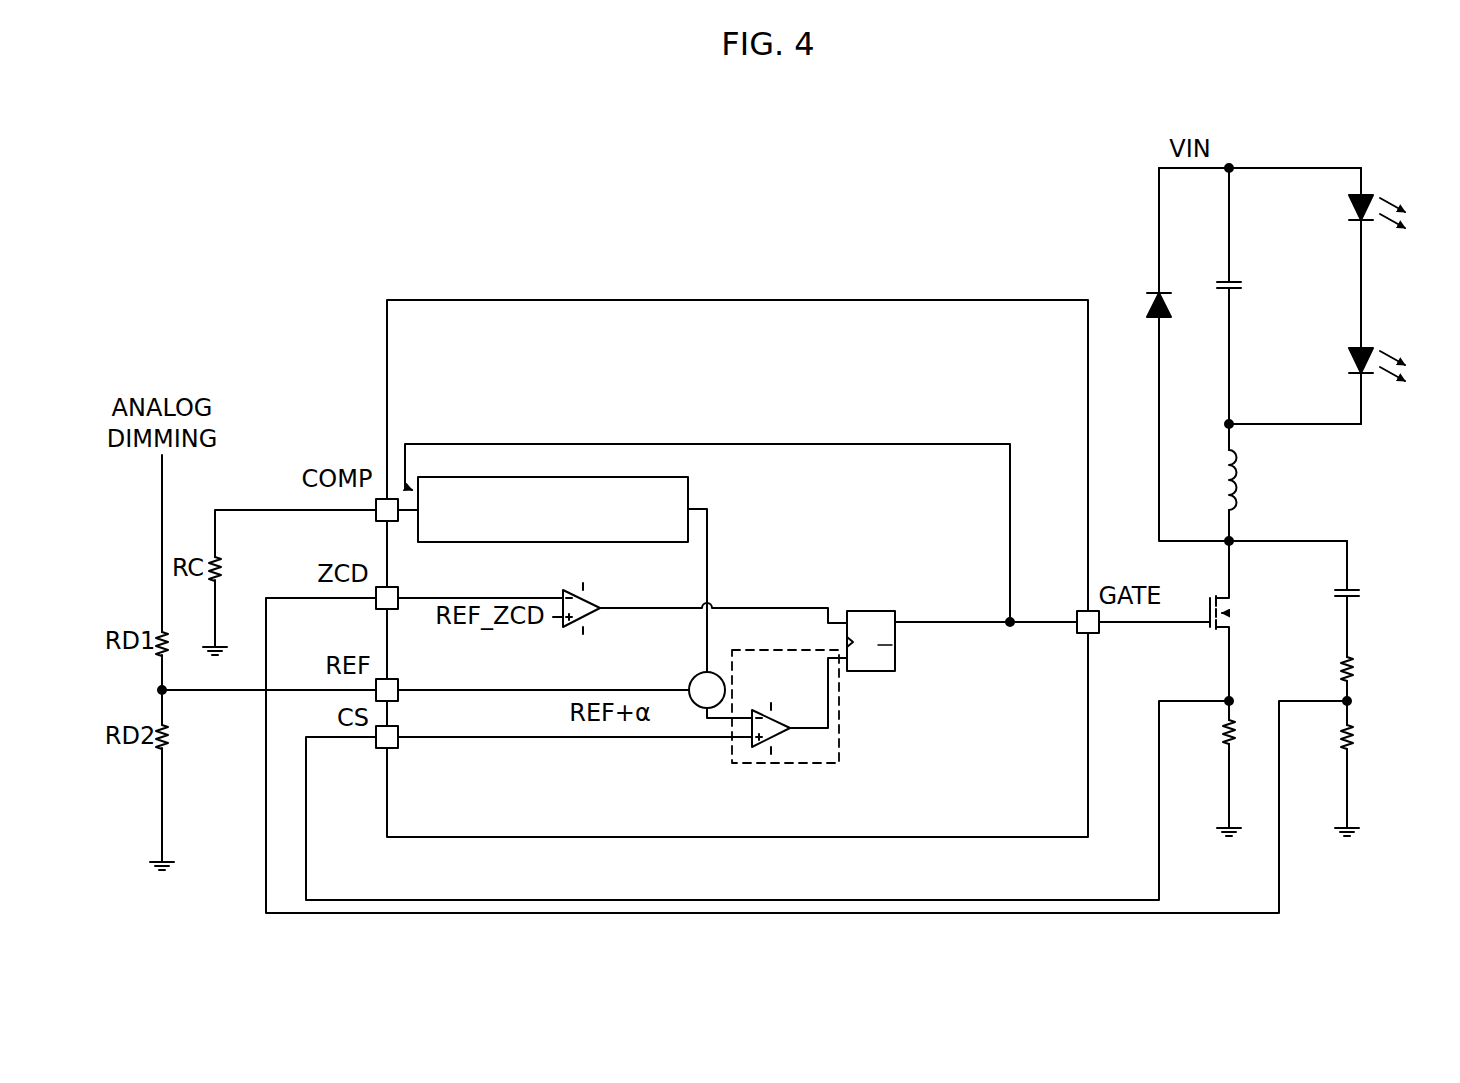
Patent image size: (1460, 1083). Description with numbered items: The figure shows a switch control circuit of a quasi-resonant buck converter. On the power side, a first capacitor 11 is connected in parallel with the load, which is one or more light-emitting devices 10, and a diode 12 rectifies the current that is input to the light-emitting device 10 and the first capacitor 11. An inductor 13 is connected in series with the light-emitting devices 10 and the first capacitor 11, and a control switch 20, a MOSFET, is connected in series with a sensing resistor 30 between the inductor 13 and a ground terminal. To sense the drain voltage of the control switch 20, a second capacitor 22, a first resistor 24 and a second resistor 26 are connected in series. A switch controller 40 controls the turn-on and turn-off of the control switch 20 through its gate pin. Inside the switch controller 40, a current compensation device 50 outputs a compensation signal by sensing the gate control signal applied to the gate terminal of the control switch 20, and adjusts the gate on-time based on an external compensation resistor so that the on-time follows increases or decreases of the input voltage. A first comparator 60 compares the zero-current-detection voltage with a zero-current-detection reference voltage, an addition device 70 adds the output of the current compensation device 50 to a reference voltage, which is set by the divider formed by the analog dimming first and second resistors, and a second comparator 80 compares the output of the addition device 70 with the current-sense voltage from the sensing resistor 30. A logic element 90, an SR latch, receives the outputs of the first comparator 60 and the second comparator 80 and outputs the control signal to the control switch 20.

The light-emitting device 10 is at (1373, 195).
The first capacitor 11 is at (1240, 282).
The diode 12 is at (1165, 317).
The inductor 13 is at (1232, 477).
The control switch 20 is at (1240, 611).
The second capacitor 22 is at (1357, 590).
The first resistor 24 is at (1355, 665).
The second resistor 26 is at (1355, 735).
The sensing resistor 30 is at (1222, 735).
The switch controller 40 is at (782, 300).
The current compensation device 50 is at (690, 485).
The first comparator 60 is at (580, 627).
The addition device 70 is at (697, 677).
The second comparator 80 is at (787, 735).
The logic element 90 is at (895, 668).